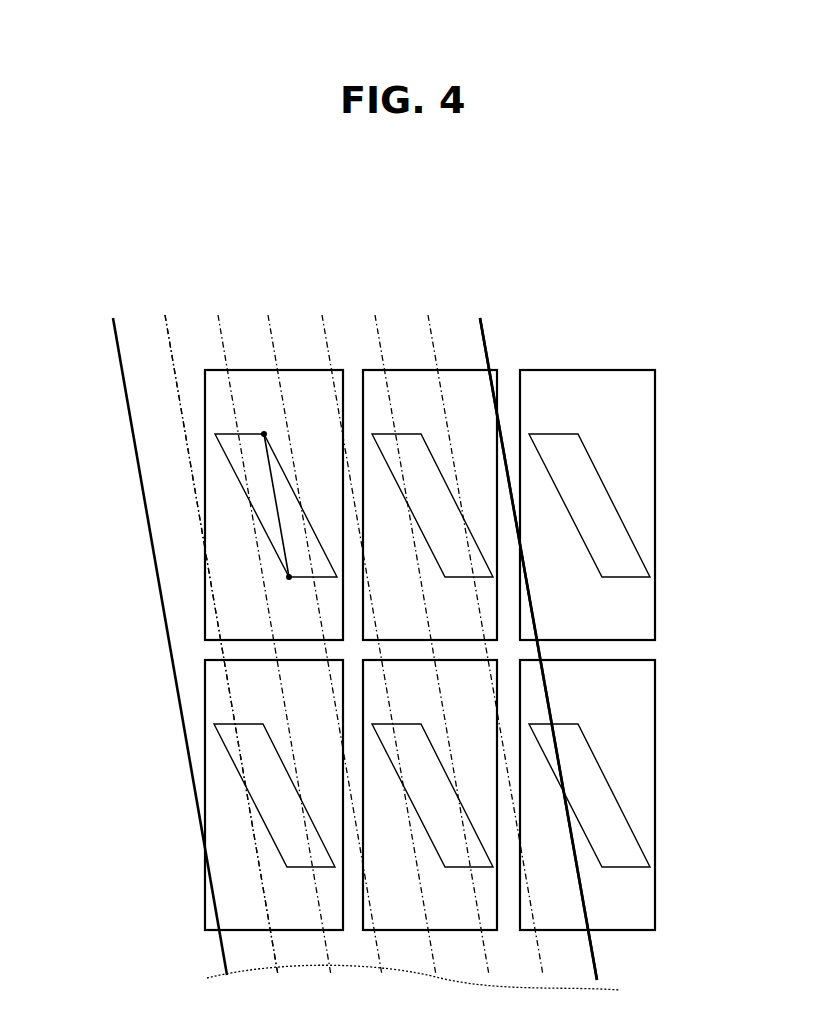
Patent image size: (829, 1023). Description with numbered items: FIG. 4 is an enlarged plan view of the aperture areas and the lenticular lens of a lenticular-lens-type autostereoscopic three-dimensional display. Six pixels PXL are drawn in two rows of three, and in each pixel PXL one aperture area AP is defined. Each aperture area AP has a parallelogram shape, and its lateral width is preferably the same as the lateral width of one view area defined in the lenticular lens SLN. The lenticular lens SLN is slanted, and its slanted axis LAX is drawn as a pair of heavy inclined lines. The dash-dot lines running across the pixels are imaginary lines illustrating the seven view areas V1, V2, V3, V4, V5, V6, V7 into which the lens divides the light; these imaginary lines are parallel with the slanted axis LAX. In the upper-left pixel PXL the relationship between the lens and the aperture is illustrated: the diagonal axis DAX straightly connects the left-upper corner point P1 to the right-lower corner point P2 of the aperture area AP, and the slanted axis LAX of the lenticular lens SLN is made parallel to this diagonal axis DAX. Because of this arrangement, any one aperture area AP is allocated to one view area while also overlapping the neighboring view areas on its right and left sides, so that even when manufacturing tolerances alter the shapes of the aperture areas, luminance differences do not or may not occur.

The pixel PXL is at (656, 525).
The aperture area AP is at (228, 455).
The diagonal axis DAX is at (278, 512).
The left-upper corner point P1 is at (264, 430).
The right-lower corner point P2 is at (287, 577).
The lenticular lens SLN is at (112, 332).
The slanted axis LAX is at (173, 375).
The view area V1 is at (137, 328).
The view area V2 is at (193, 328).
The view area V3 is at (247, 328).
The view area V4 is at (300, 328).
The view area V5 is at (354, 328).
The view area V6 is at (407, 328).
The view area V7 is at (457, 328).